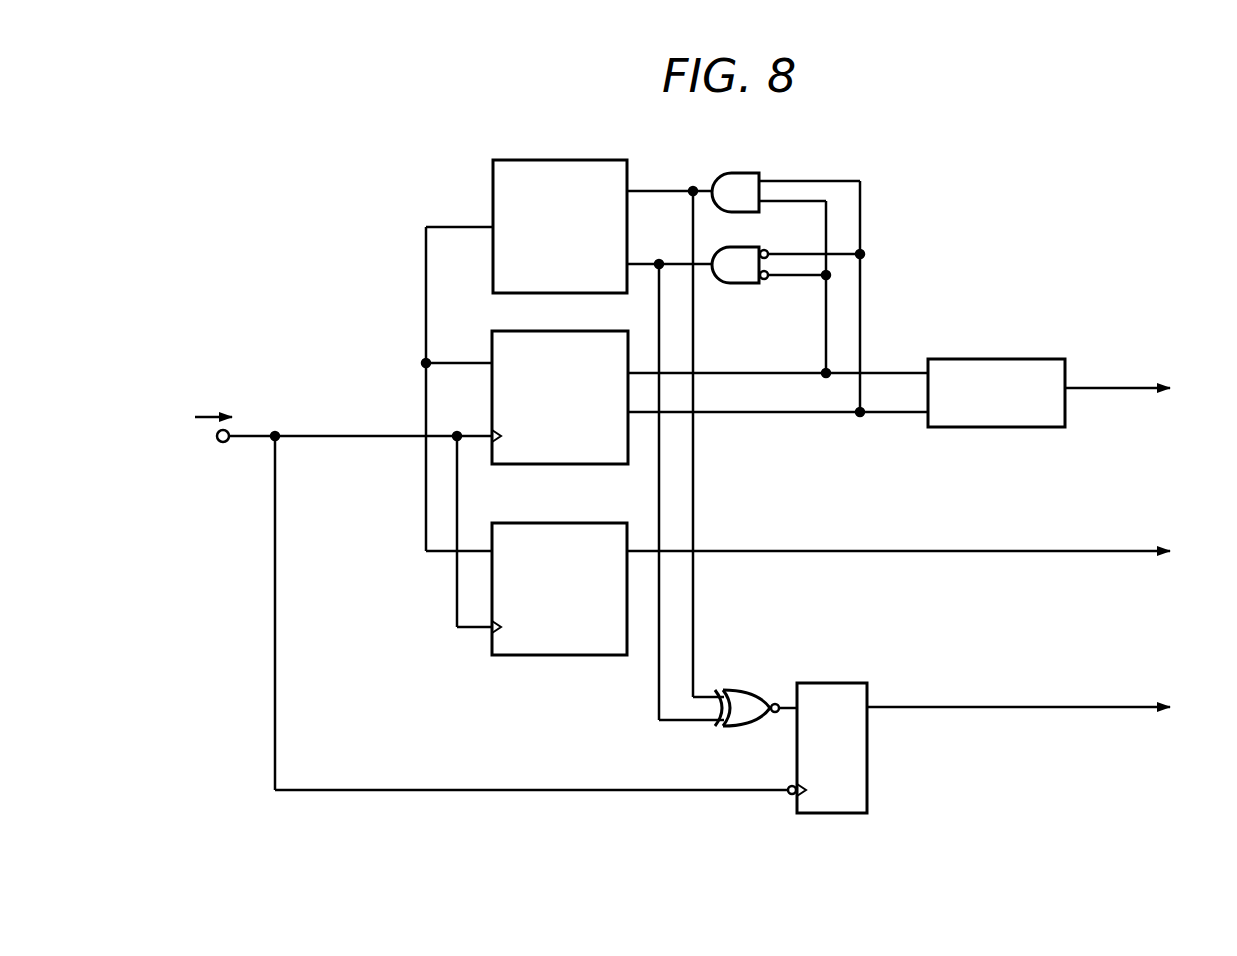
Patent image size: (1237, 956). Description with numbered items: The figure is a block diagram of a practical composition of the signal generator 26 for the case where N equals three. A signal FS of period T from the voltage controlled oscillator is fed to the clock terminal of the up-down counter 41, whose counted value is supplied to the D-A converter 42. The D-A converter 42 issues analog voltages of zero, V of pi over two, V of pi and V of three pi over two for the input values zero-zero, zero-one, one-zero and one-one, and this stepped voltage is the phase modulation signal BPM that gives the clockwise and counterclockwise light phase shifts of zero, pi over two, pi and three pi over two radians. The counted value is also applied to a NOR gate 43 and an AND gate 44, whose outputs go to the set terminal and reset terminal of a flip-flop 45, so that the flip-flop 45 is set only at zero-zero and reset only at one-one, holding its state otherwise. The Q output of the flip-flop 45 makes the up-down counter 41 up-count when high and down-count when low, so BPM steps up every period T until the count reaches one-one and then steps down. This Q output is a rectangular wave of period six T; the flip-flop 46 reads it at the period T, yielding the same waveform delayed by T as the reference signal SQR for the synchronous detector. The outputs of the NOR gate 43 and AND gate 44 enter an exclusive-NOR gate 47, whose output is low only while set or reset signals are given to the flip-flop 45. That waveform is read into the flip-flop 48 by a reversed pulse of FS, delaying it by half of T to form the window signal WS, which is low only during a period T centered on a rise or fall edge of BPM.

The signal generator 26 is at (309, 259).
The up-down counter 41 is at (612, 464).
The D-A converter 42 is at (1050, 427).
The NOR gate 43 is at (745, 284).
The AND gate 44 is at (743, 173).
The flip-flop 45 is at (493, 170).
The flip-flop 46 is at (612, 655).
The XOR-bar gate 47 is at (742, 690).
The flip-flop 48 is at (867, 795).